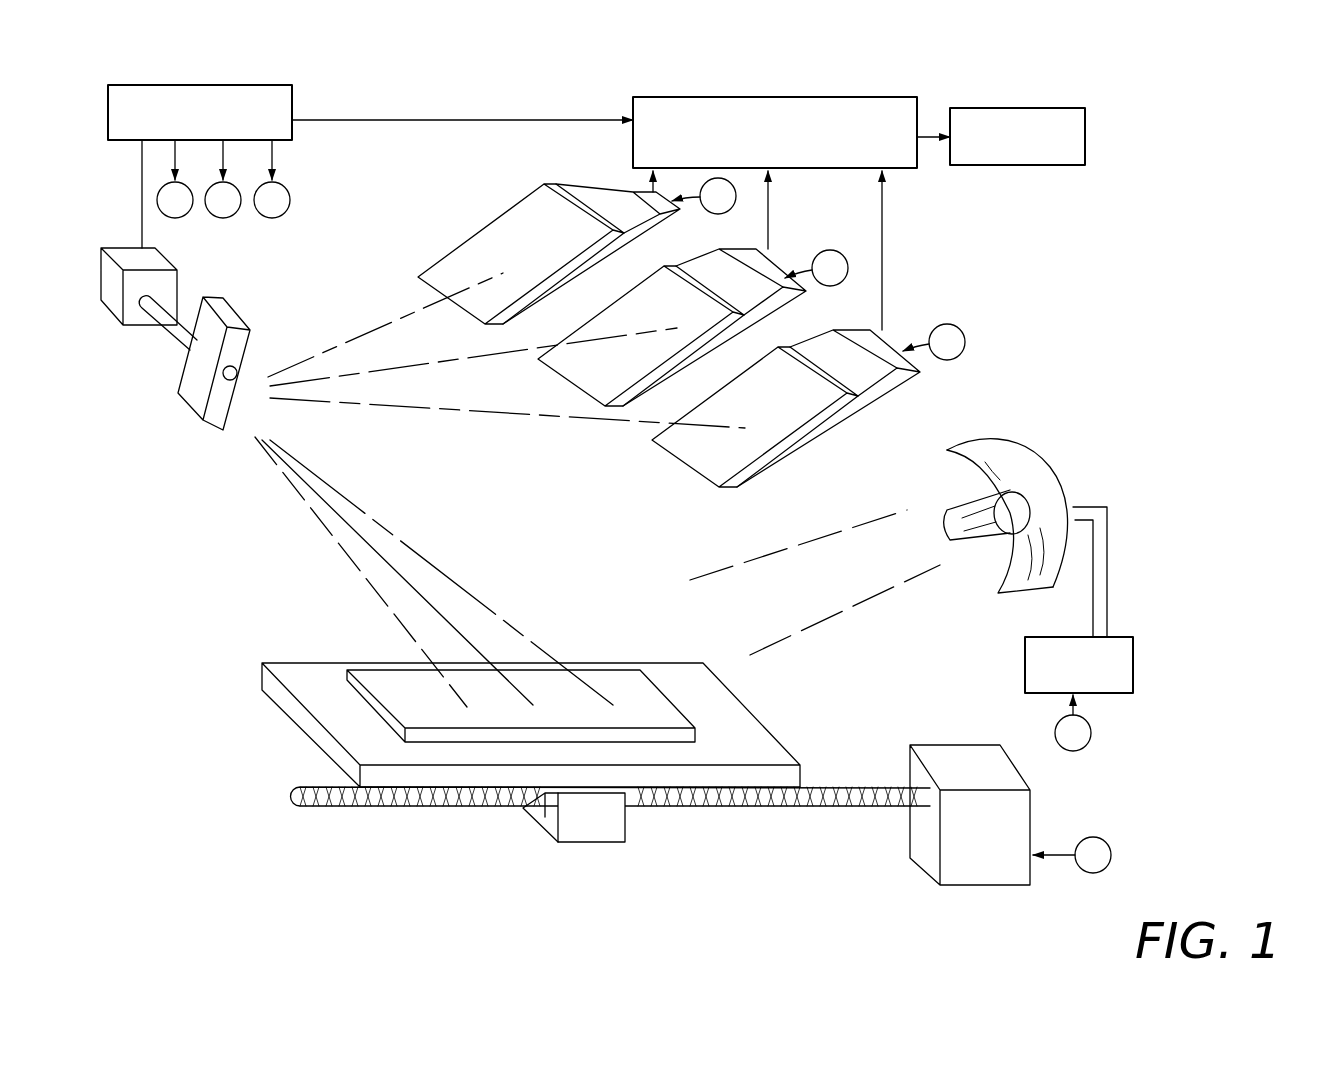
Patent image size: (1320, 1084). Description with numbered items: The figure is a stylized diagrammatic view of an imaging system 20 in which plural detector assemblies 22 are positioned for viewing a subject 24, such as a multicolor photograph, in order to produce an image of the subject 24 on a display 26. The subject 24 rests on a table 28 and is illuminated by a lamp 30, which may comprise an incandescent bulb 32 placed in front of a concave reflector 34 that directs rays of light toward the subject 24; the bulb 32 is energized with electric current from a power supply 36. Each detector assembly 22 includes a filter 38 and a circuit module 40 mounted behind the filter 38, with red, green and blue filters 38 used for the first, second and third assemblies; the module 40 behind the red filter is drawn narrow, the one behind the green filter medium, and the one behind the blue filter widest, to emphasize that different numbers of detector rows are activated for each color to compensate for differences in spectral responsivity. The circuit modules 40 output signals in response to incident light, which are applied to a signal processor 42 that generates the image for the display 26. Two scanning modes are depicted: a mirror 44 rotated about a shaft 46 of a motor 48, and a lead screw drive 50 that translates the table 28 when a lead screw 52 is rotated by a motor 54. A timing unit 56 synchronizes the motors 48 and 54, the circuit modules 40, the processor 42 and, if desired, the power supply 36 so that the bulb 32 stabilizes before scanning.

The imaging system 20 is at (1052, 337).
The detector assembly 22 is at (680, 329).
The subject 24 is at (595, 665).
The display 26 is at (1008, 167).
The table 28 is at (755, 705).
The lamp 30 is at (1050, 452).
The incandescent bulb 32 is at (965, 500).
The concave reflector 34 is at (1005, 597).
The power supply 36 is at (1025, 660).
The filter 38 is at (437, 258).
The circuit module 40 is at (732, 256).
The signal processor 42 is at (898, 170).
The mirror 44 is at (185, 408).
The shaft 46 is at (173, 345).
The motor 48 is at (140, 328).
The lead screw drive 50 is at (580, 846).
The lead screw 52 is at (752, 808).
The motor 54 is at (915, 855).
The timing unit 56 is at (293, 132).